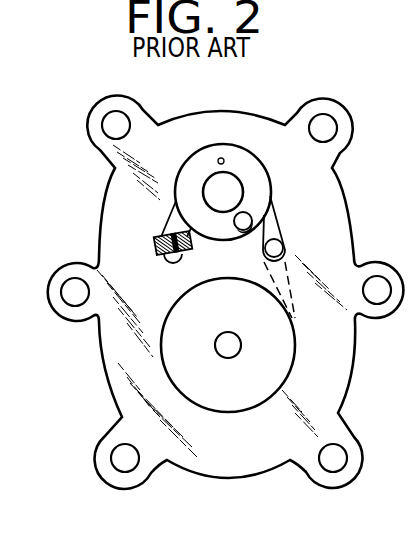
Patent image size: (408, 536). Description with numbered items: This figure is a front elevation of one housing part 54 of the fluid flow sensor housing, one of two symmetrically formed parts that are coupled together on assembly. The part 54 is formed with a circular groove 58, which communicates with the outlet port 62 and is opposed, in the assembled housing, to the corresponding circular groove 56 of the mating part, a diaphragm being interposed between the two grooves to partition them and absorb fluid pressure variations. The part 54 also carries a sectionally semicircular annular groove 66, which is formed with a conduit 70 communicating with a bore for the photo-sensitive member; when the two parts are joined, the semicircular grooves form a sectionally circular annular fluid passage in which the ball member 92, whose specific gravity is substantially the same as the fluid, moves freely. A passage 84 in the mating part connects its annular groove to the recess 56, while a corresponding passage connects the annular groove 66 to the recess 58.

The housing part 54 is at (233, 112).
The circular groove 56 is at (400, 0).
The circular groove 58 is at (280, 362).
The outlet port 62 is at (228, 348).
The annular groove 66 is at (250, 180).
The conduit 70 is at (224, 158).
The passage 84 is at (272, 226).
The ball member 92 is at (241, 229).